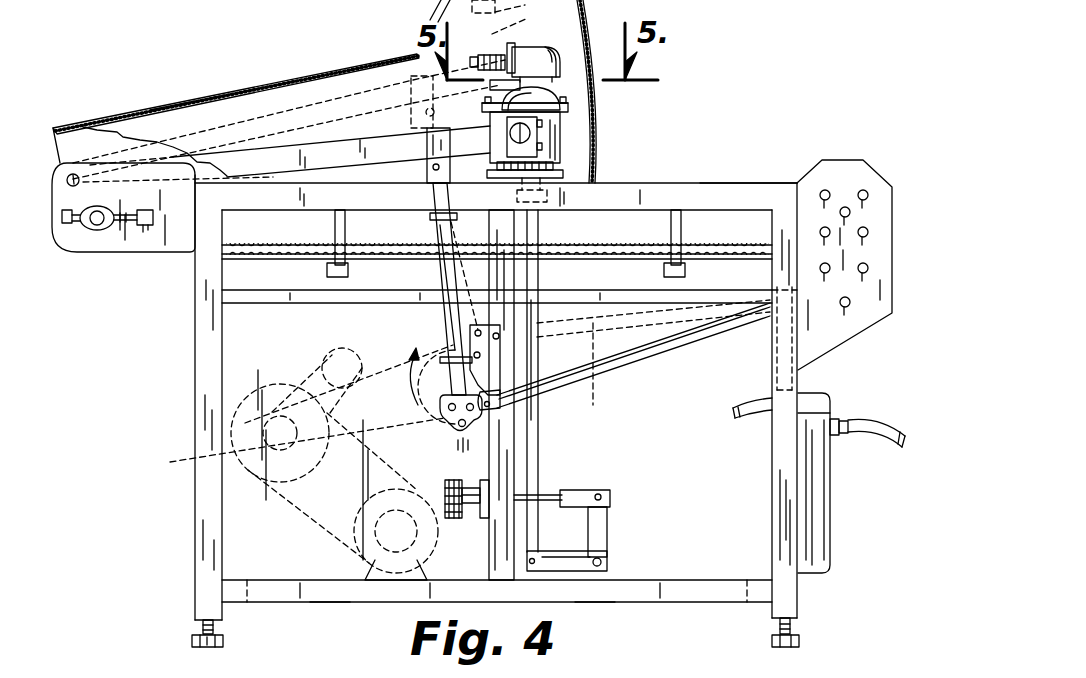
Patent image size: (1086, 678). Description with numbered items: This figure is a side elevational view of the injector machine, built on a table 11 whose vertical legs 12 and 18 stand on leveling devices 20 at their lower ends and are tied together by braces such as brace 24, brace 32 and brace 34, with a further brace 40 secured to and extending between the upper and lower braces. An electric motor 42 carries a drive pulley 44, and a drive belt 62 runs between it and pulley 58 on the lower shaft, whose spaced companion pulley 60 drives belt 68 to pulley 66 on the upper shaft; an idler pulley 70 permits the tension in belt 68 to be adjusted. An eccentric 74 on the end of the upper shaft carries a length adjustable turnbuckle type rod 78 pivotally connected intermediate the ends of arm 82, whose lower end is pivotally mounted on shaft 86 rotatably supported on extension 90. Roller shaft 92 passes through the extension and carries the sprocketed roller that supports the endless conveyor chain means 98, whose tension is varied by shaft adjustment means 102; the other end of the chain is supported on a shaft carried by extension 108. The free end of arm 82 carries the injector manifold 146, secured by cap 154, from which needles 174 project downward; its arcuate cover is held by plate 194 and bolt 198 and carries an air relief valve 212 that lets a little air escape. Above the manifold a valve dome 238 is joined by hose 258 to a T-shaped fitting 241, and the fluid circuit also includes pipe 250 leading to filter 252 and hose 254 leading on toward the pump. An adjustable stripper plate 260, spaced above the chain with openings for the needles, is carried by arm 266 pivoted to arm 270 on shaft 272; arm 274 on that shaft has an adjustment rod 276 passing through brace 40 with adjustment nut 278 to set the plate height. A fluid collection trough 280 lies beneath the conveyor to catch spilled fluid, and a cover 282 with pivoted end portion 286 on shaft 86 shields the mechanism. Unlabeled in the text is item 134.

The table 11 is at (765, 178).
The vertical leg 12 is at (800, 602).
The vertical leg 18 is at (205, 583).
The leveling device 20 is at (223, 647).
The brace 24 is at (762, 605).
The brace 32 is at (235, 592).
The brace 34 is at (702, 182).
The brace 40 is at (500, 570).
The electric motor 42 is at (360, 545).
The drive pulley 44 is at (355, 532).
The pulley 58 is at (240, 428).
The pulley 60 is at (297, 410).
The drive belt 62 is at (270, 505).
The pulley 66 is at (418, 388).
The drive belt 68 is at (320, 360).
The idler pulley 70 is at (343, 348).
The eccentric 74 is at (445, 345).
The turnbuckle type rod 78 is at (447, 270).
The arm 82 is at (300, 117).
The shaft 86 is at (76, 174).
The extension 90 is at (108, 247).
The roller shaft 92 is at (88, 227).
The conveyor chain means 98 is at (707, 241).
The shaft adjustment means 102 is at (129, 230).
The extension 108 is at (870, 172).
The diagonal bar 134 is at (628, 358).
The injector manifold 146 is at (570, 143).
The cap 154 is at (555, 128).
The needle 174 is at (572, 164).
The plate 194 is at (330, 640).
The bolt 198 is at (595, 639).
The air relief valve 212 is at (505, 87).
The dome 238 is at (560, 56).
The T-shaped fitting 241 is at (492, 36).
The pipe 250 is at (888, 420).
The filter 252 is at (820, 530).
The hose 254 is at (742, 405).
The hose 258 is at (497, 96).
The adjustable stripper plate 260 is at (578, 175).
The arm 266 is at (542, 272).
The arm 270 is at (567, 572).
The shaft 272 is at (607, 562).
The arm 274 is at (607, 530).
The adjustment rod 276 is at (562, 490).
The adjustment nut 278 is at (455, 520).
The fluid collection trough 280 is at (250, 298).
The cover 282 is at (223, 88).
The end portion 286 is at (205, 99).